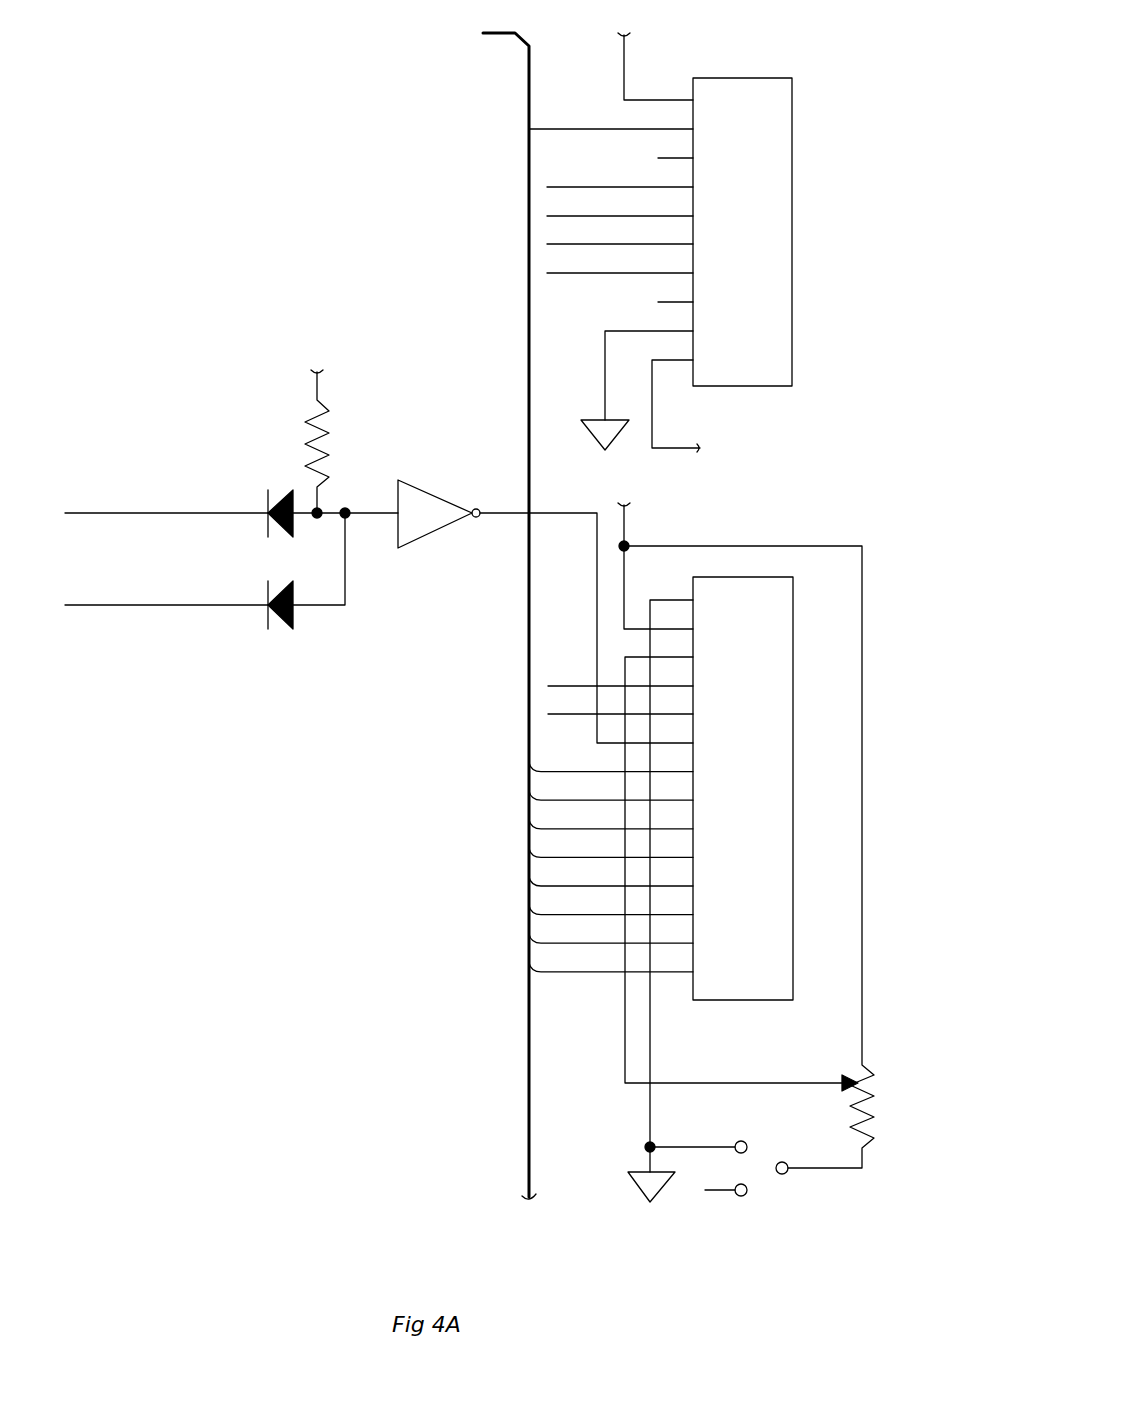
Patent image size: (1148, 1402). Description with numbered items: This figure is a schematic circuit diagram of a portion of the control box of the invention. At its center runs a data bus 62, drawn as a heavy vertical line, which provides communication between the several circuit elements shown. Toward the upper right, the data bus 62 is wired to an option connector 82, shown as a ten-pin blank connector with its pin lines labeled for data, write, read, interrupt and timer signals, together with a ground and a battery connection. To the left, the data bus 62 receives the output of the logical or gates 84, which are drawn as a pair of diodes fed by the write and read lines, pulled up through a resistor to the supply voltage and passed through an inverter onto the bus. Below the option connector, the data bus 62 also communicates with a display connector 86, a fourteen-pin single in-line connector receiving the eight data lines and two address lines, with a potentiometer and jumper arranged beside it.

The data bus 62 is at (529, 403).
The option connector 82 is at (792, 240).
The logical or gates 84 is at (258, 430).
The display connector 86 is at (775, 670).